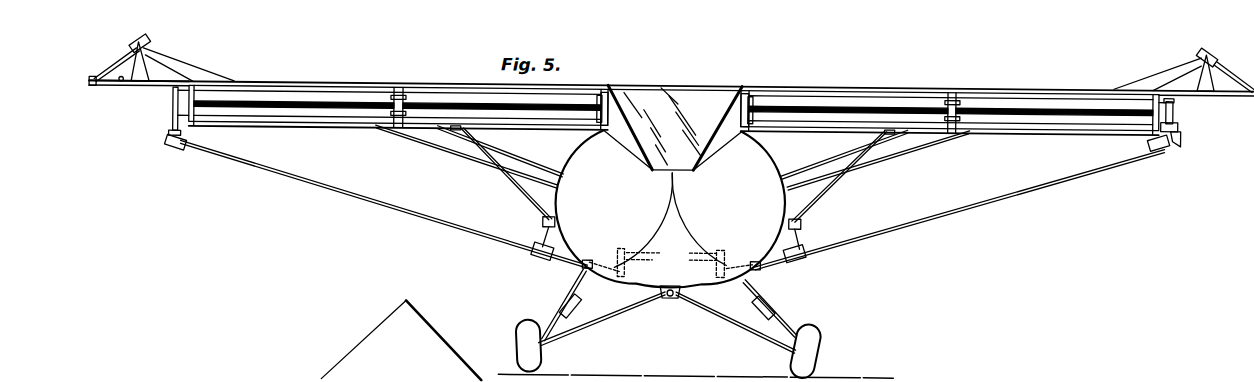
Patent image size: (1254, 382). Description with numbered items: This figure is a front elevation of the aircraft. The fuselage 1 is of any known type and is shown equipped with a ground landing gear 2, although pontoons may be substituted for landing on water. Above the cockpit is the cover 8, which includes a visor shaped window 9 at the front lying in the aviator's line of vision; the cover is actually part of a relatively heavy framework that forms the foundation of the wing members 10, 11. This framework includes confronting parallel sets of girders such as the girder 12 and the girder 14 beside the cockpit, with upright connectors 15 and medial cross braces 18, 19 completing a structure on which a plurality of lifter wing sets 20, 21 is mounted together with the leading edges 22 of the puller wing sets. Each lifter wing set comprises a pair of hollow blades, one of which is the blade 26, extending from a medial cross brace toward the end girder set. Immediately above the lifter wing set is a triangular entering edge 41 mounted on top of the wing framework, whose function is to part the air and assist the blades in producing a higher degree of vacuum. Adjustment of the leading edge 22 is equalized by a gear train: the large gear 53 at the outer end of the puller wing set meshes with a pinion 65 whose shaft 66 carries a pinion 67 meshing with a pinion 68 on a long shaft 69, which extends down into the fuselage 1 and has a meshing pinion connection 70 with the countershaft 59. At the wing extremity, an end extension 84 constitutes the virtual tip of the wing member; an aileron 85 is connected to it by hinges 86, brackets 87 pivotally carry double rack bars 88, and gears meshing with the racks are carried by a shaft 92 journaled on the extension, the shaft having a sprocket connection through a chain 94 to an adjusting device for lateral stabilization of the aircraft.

The fuselage 1 is at (748, 250).
The ground landing gear 2 is at (569, 333).
The cover 8 is at (674, 115).
The visor shaped window 9 is at (665, 102).
The wing member 10 is at (962, 84).
The wing member 11 is at (378, 85).
The girder 12 is at (603, 104).
The girder 14 is at (604, 133).
The upright connector 15 is at (598, 118).
The medial cross brace 18 is at (962, 100).
The medial cross brace 19 is at (398, 103).
The lifter wing set 20 is at (838, 94).
The lifter wing set 21 is at (310, 94).
The leading edge 22 is at (226, 109).
The hollow blade 26 is at (409, 125).
The triangular entering edge 41 is at (326, 88).
The large gear 53 is at (1172, 112).
The countershaft 59 is at (670, 264).
The pinion 65 is at (1173, 96).
The shaft 66 is at (1177, 128).
The pinion 67 is at (1157, 151).
The pinion 68 is at (1181, 142).
The long shaft 69 is at (1045, 188).
The meshing pinion connection 70 is at (718, 250).
The end extension 84 is at (169, 95).
The aileron 85 is at (99, 93).
The hinge 86 is at (122, 90).
The bracket 87 is at (92, 82).
The double rack bar 88 is at (126, 64).
The shaft 92 is at (150, 54).
The chain 94 is at (207, 74).